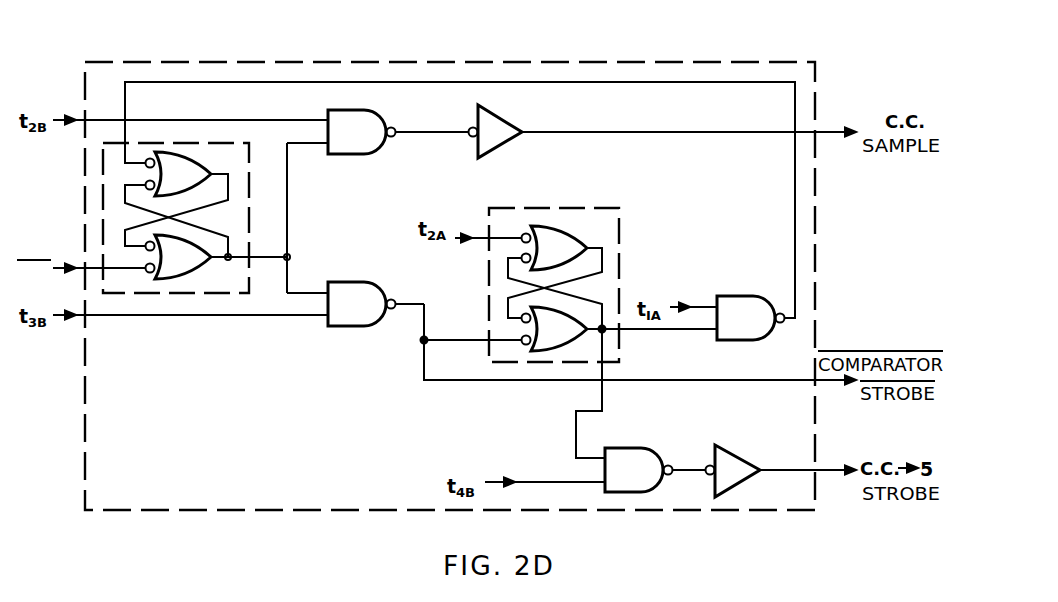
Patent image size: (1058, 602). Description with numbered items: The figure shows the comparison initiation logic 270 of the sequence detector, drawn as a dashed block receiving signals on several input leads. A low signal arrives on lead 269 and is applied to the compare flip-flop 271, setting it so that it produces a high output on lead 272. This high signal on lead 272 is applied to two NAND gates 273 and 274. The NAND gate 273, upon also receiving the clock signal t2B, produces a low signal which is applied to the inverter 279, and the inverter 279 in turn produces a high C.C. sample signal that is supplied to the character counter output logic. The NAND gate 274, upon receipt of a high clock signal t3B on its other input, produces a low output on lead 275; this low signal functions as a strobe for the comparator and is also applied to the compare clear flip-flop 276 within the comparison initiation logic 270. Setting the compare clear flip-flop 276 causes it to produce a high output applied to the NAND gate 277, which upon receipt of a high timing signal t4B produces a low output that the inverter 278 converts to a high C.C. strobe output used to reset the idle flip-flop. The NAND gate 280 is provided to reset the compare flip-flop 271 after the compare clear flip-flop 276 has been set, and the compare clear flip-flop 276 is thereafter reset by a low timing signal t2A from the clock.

The lead 269 is at (97, 268).
The comparison initiation logic 270 is at (227, 62).
The compare flip-flop 271 is at (137, 294).
The lead 272 is at (272, 250).
The NAND gate 273 is at (348, 154).
The NAND gate 274 is at (357, 281).
The lead 275 is at (688, 380).
The compare clear flip-flop 276 is at (528, 208).
The NAND gate 277 is at (623, 447).
The inverter 278 is at (733, 455).
The inverter 279 is at (512, 118).
The NAND gate 280 is at (727, 297).